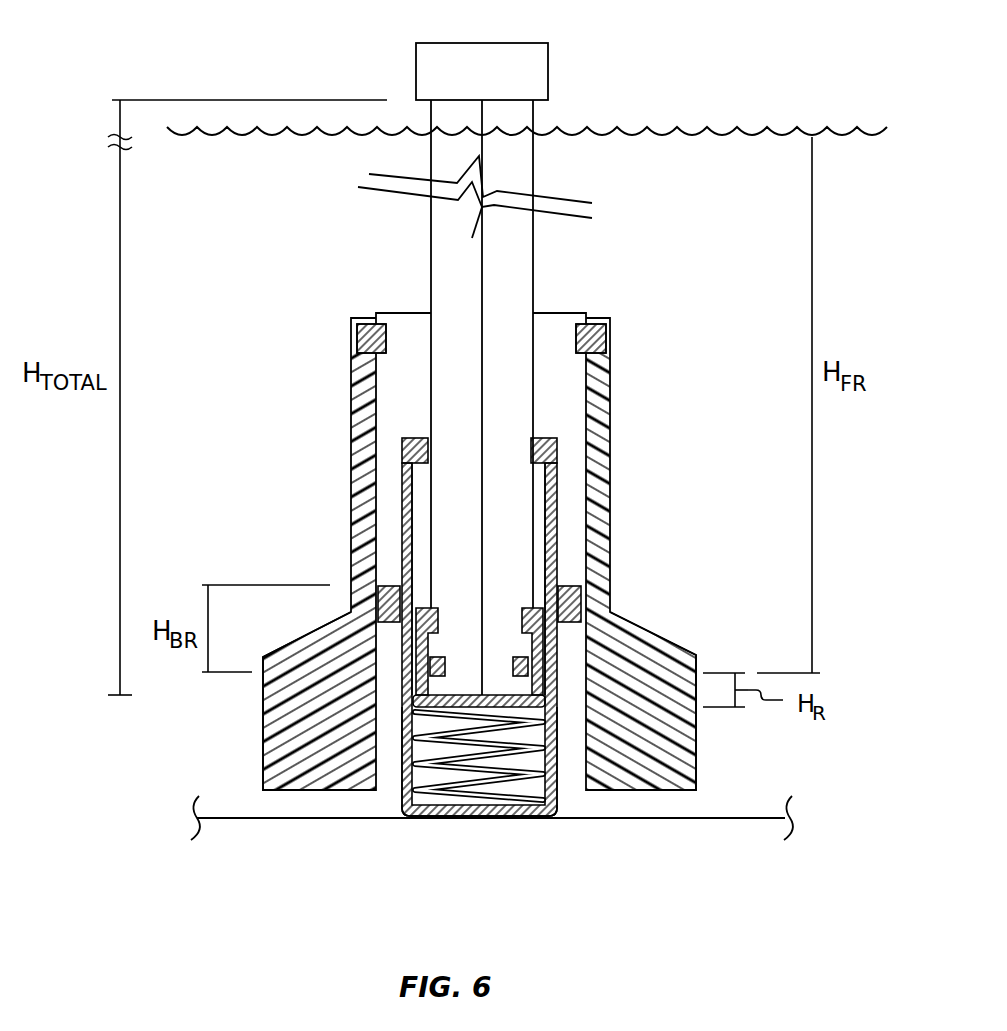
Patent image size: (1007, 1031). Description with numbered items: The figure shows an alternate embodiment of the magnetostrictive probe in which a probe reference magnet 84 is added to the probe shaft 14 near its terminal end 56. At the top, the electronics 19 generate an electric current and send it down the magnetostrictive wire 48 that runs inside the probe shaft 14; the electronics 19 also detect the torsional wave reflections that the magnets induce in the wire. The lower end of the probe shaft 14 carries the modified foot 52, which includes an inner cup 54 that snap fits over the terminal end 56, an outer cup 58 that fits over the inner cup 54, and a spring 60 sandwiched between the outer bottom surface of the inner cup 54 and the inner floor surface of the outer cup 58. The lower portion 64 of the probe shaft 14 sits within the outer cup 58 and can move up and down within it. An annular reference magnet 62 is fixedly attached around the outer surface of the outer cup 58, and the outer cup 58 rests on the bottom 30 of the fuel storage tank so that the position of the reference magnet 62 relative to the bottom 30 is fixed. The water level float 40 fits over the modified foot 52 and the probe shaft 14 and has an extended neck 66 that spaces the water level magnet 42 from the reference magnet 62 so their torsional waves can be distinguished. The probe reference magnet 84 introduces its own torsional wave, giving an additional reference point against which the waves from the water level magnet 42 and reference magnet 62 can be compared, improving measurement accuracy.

The electronics 19 is at (510, 43).
The magnetostrictive wire 48 is at (482, 280).
The probe shaft 14 is at (540, 388).
The extended neck 66 is at (352, 475).
The water level float 40 is at (316, 632).
The water level magnet 42 is at (357, 342).
The outer cup 58 is at (572, 497).
The modified foot 52 is at (437, 845).
The spring 60 is at (548, 820).
The lower portion of the probe shaft 64 is at (458, 450).
The terminal end 56 is at (461, 615).
The reference magnet 62 is at (557, 587).
The probe reference magnet 84 is at (522, 658).
The inner cup 54 is at (543, 717).
The bottom 30 is at (228, 816).